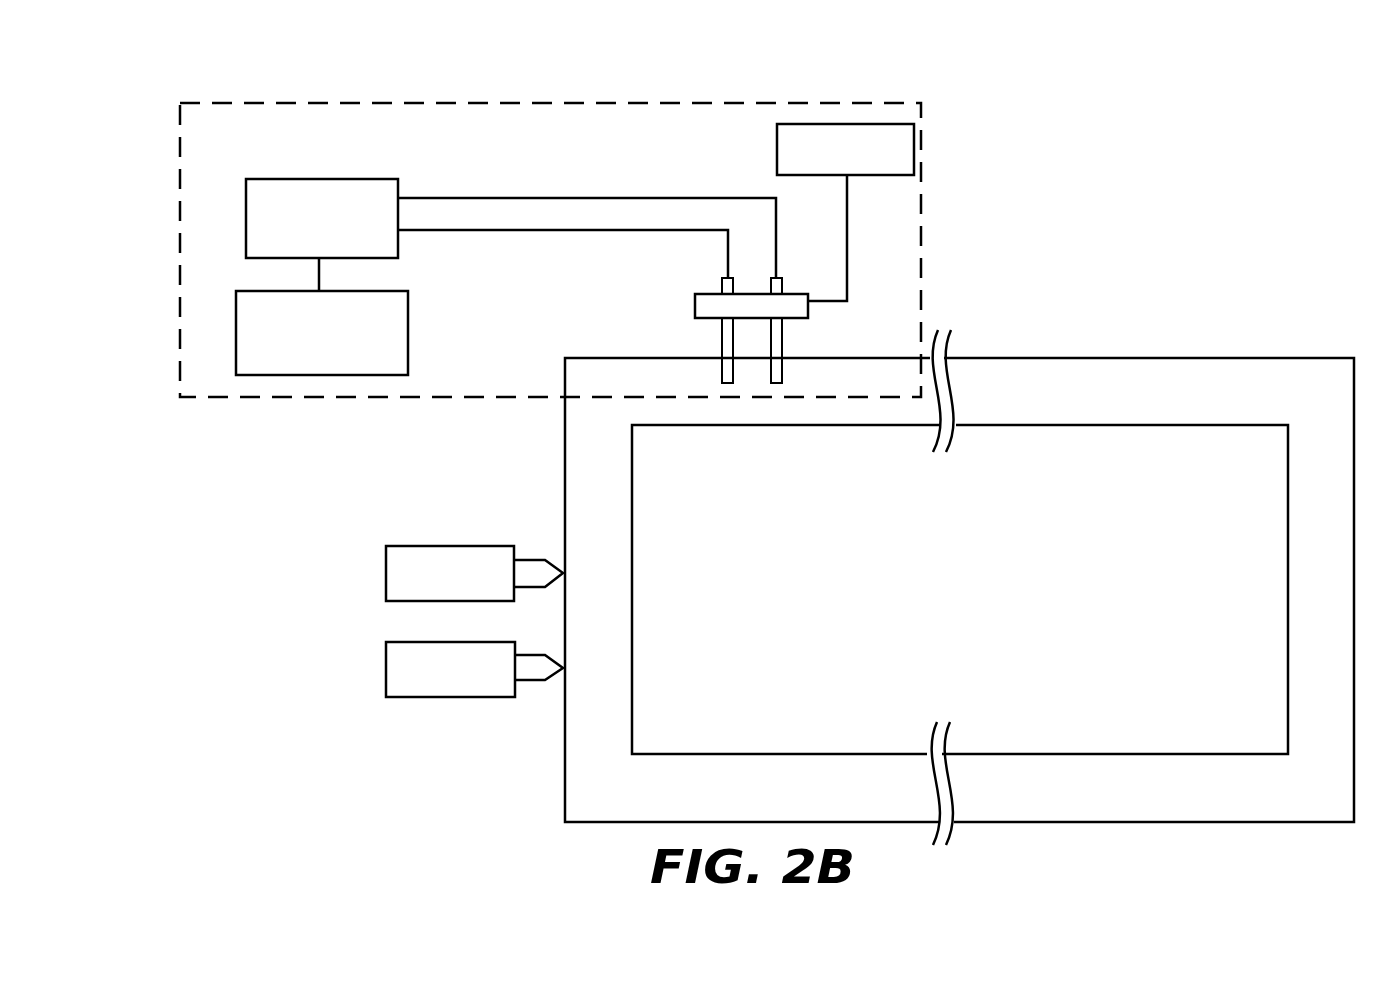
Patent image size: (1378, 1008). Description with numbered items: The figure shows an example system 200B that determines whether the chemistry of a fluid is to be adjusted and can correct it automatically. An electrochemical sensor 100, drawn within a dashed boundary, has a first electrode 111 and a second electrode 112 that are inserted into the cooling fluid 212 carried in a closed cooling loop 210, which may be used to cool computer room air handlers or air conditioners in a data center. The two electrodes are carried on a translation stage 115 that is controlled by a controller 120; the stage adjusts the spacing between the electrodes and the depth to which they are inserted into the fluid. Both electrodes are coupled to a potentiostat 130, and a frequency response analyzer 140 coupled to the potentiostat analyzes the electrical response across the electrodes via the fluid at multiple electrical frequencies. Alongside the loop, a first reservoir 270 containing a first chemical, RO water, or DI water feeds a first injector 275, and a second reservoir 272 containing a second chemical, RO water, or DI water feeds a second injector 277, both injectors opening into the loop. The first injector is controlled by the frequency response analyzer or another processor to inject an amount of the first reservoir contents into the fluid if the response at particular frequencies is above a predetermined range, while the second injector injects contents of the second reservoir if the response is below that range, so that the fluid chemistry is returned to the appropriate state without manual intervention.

The system 200B is at (1150, 85).
The sensor 100 is at (921, 208).
The controller 120 is at (777, 154).
The potentiostat 130 is at (398, 184).
The frequency response analyzer 140 is at (408, 315).
The translation stage 115 is at (790, 292).
The second electrode 112 is at (721, 345).
The first electrode 111 is at (779, 345).
The cooling loop 210 is at (1197, 358).
The cooling fluid 212 is at (1090, 402).
The first reservoir 270 is at (386, 568).
The second reservoir 272 is at (386, 663).
The first injector 275 is at (532, 560).
The second injector 277 is at (533, 681).